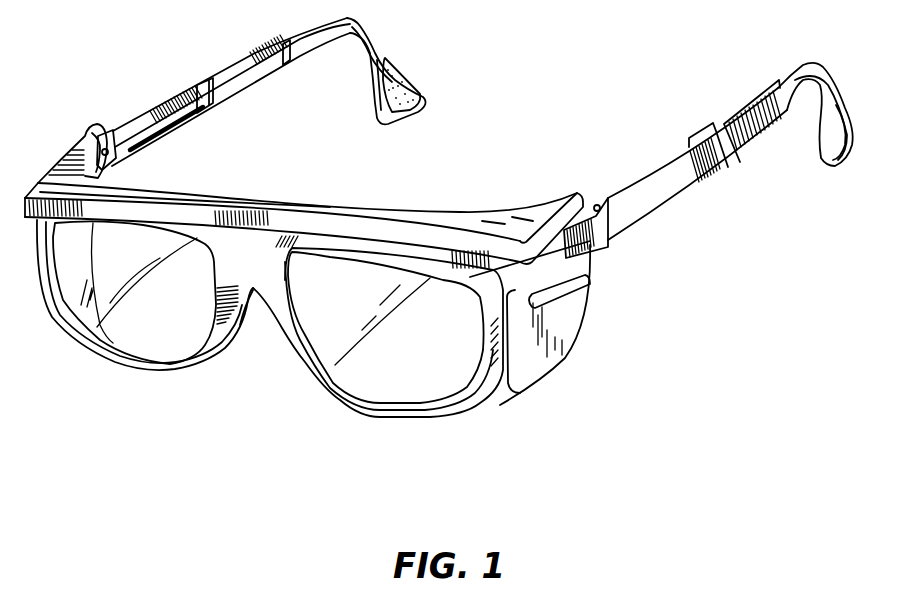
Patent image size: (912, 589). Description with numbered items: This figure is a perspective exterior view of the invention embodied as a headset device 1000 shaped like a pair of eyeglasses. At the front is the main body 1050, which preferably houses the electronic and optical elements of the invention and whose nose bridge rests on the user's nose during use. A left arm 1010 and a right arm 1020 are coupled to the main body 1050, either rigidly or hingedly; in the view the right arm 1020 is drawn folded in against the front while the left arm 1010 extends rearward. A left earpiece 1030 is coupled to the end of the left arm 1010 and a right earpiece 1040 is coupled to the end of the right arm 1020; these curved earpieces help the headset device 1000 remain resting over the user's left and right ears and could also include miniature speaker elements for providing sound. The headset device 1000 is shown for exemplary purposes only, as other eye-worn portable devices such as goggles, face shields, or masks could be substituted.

The headset device 1000 is at (557, 453).
The left arm 1010 is at (668, 187).
The right arm 1020 is at (187, 90).
The left earpiece 1030 is at (843, 160).
The right earpiece 1040 is at (410, 80).
The main body 1050 is at (264, 245).